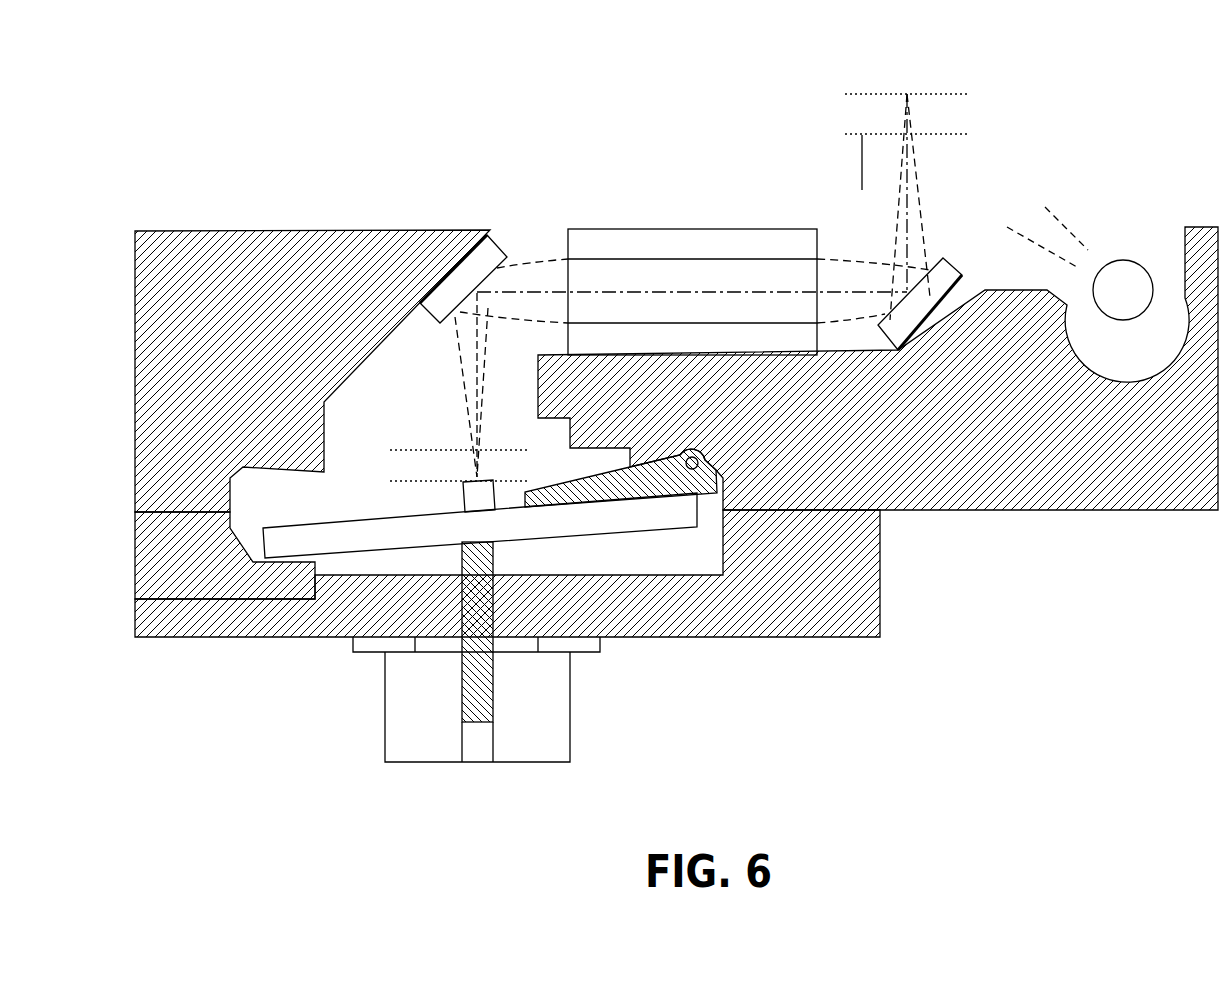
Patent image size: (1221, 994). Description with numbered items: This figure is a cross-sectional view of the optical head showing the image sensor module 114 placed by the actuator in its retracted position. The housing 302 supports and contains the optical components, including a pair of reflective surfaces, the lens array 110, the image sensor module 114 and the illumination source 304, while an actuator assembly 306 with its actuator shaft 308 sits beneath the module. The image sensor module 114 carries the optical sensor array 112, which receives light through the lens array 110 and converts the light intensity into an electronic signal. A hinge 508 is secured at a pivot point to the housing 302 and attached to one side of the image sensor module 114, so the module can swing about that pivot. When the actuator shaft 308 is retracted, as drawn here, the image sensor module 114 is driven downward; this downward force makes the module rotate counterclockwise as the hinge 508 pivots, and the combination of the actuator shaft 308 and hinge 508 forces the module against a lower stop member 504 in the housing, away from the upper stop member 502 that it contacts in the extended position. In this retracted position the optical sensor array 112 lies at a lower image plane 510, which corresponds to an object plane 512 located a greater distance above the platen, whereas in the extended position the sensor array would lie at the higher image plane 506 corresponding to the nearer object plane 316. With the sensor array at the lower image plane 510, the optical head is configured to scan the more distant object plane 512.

The lens array 110 is at (647, 229).
The optical sensor array 112 is at (440, 498).
The image sensor module 114 is at (640, 538).
The housing 302 is at (1030, 510).
The illumination source 304 is at (1140, 265).
The actuator assembly 306 is at (588, 763).
The actuator shaft 308 is at (492, 682).
The object plane 316 is at (872, 182).
The upper stop member 502 is at (338, 447).
The lower stop member 504 is at (293, 607).
The image plane 506 is at (434, 450).
The hinge 508 is at (712, 437).
The lower image plane 510 is at (397, 481).
The object plane 512 is at (868, 93).